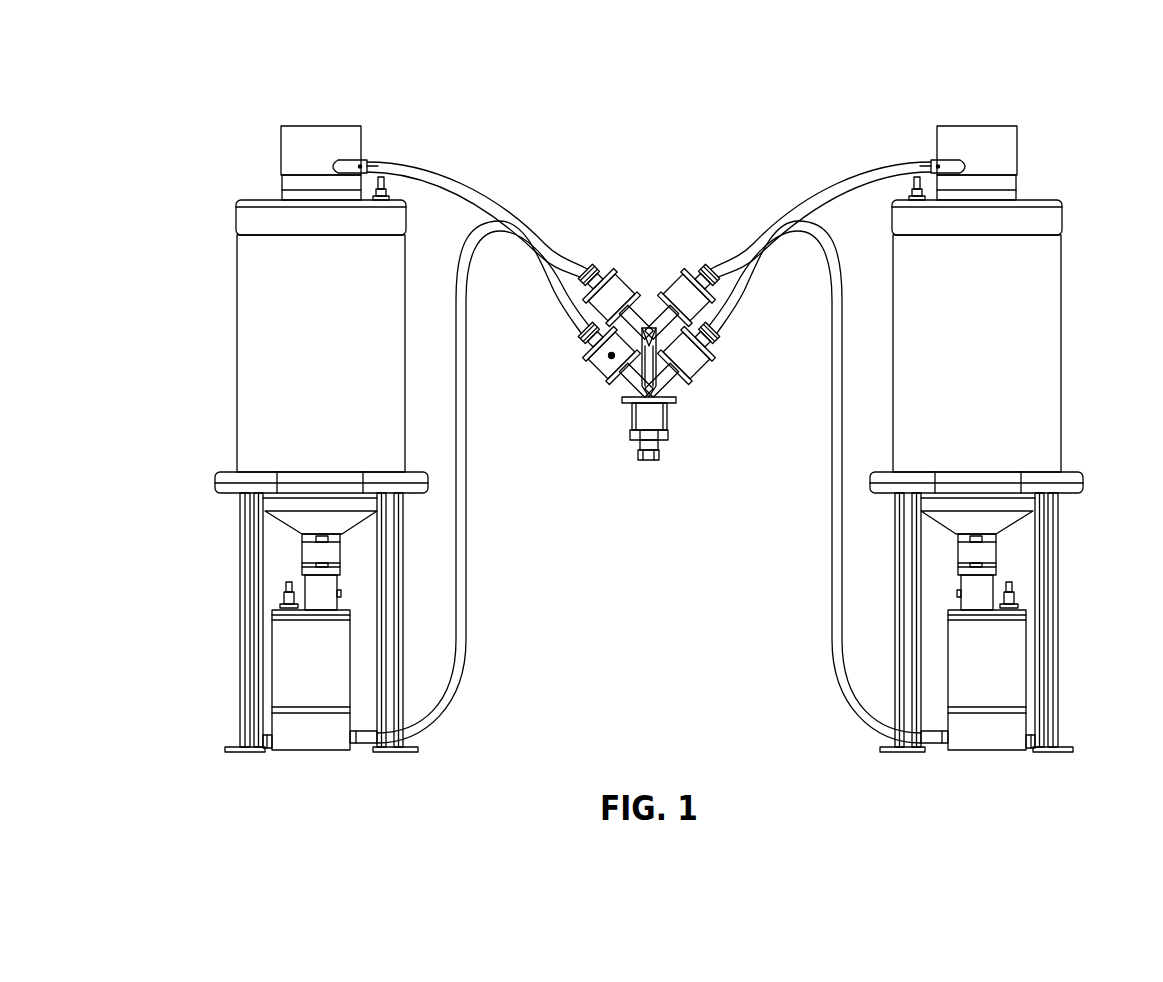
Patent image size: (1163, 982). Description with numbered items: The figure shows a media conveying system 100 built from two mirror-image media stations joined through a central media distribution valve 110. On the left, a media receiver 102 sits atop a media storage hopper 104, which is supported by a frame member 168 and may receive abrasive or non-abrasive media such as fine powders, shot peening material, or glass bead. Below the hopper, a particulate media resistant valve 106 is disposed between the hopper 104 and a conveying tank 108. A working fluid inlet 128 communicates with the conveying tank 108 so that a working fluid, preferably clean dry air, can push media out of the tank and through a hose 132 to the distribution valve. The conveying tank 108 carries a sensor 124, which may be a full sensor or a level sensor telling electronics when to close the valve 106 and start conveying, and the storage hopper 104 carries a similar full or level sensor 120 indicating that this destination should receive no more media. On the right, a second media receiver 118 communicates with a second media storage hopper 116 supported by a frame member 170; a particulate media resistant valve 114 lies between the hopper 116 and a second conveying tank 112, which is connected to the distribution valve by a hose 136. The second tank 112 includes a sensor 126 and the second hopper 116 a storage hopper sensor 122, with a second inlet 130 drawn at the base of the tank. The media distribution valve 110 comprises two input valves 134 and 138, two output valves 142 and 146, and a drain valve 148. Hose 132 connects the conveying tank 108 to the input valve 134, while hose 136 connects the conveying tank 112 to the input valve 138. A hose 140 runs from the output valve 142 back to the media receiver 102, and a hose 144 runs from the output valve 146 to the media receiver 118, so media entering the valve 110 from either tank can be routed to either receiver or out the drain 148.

The media conveying system 100 is at (650, 439).
The media receiver 102 is at (281, 165).
The media storage hopper 104 is at (338, 352).
The particulate media resistant valve 106 is at (280, 560).
The conveying tank 108 is at (330, 675).
The media distribution valve 110 is at (649, 289).
The second conveying tank 112 is at (1003, 675).
The particulate media resistant valve 114 is at (1018, 560).
The second media storage hopper 116 is at (1000, 352).
The second media receiver 118 is at (1018, 165).
The full sensor 120 is at (388, 178).
The storage hopper sensor 122 is at (914, 175).
The conveying tank sensor 124 is at (287, 600).
The sensor 126 is at (1011, 600).
The working fluid inlet 128 is at (268, 749).
The second pump drain fitting 130 is at (1029, 750).
The hose 132 is at (467, 488).
The input valve 134 is at (625, 278).
The hose 136 is at (833, 542).
The input valve 138 is at (672, 278).
The hose 140 is at (500, 198).
The output valve 142 is at (592, 384).
The hose 144 is at (840, 168).
The output valve 146 is at (706, 384).
The drain valve 148 is at (680, 463).
The frame member 168 is at (240, 720).
The frame member 170 is at (1058, 720).